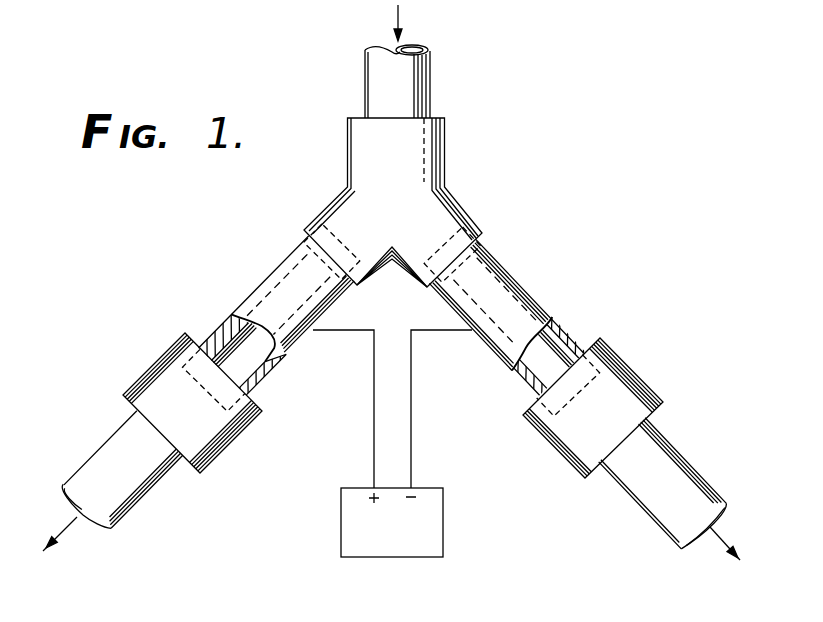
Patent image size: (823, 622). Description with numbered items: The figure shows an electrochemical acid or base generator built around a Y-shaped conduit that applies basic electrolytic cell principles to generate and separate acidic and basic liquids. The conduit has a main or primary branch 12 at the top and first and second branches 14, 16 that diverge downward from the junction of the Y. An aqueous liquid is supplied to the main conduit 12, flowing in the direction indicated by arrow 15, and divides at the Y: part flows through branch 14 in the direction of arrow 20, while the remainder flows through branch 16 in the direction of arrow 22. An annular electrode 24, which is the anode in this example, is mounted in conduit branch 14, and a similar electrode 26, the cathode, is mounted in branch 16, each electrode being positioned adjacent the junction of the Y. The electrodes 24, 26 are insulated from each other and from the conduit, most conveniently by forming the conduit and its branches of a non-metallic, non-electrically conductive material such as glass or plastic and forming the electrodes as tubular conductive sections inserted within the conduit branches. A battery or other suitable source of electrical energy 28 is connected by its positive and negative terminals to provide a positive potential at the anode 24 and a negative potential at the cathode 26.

The main branch 12 is at (428, 150).
The first branch 14 is at (150, 488).
The arrow 15 is at (398, 15).
The second branch 16 is at (680, 457).
The arrow 20 is at (50, 546).
The arrow 22 is at (718, 537).
The annular electrode 24 is at (278, 279).
The electrode 26 is at (525, 290).
The source of electrical energy 28 is at (392, 443).